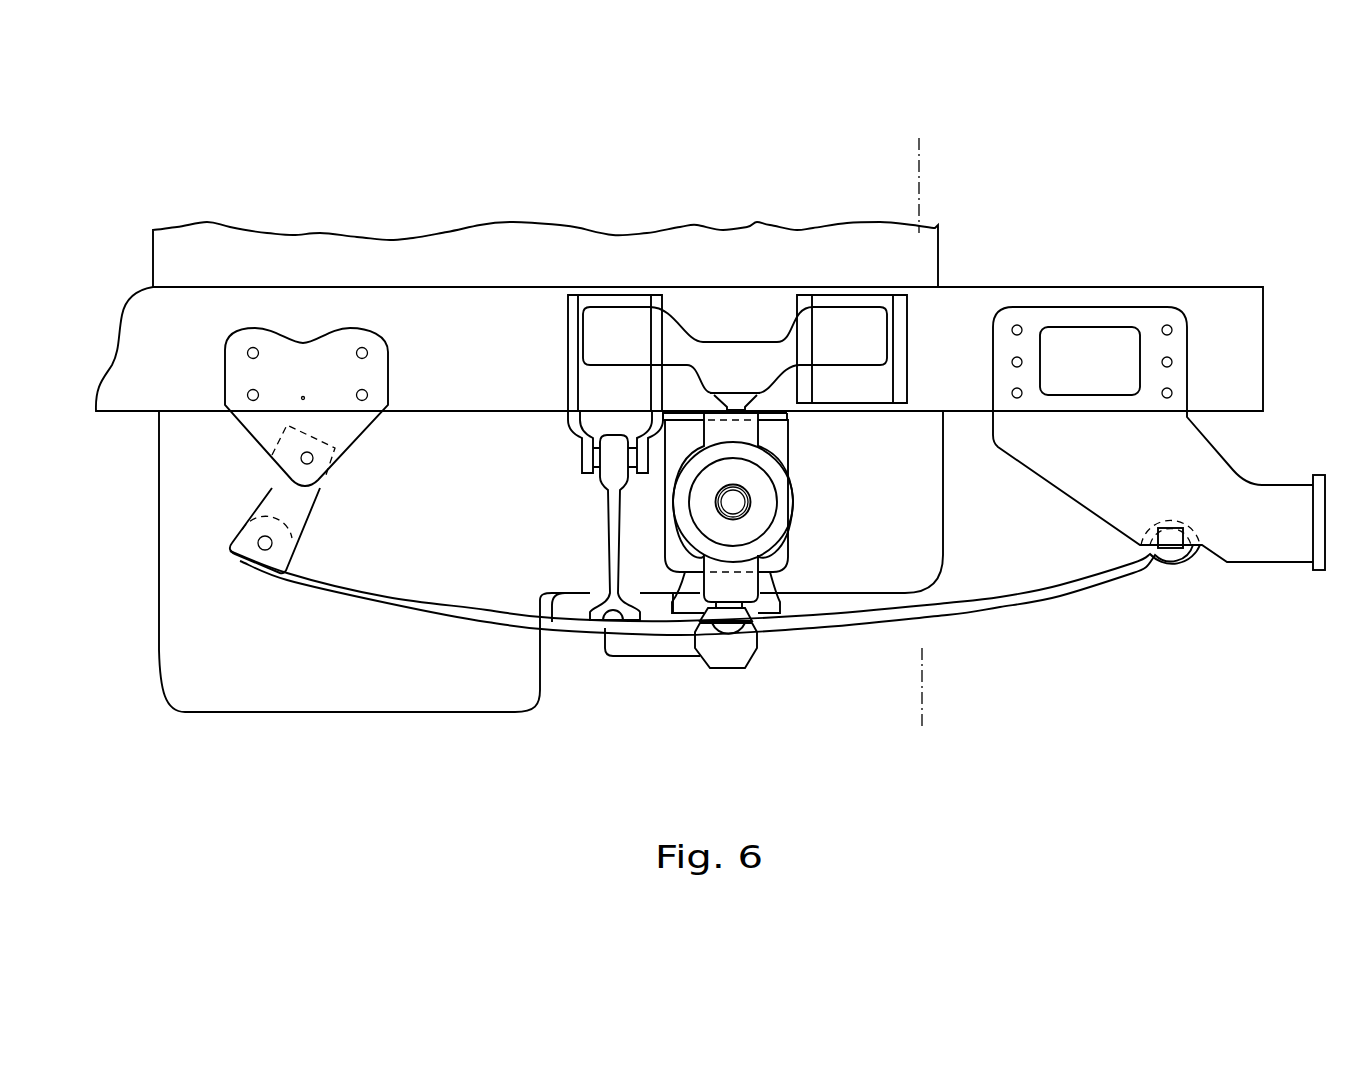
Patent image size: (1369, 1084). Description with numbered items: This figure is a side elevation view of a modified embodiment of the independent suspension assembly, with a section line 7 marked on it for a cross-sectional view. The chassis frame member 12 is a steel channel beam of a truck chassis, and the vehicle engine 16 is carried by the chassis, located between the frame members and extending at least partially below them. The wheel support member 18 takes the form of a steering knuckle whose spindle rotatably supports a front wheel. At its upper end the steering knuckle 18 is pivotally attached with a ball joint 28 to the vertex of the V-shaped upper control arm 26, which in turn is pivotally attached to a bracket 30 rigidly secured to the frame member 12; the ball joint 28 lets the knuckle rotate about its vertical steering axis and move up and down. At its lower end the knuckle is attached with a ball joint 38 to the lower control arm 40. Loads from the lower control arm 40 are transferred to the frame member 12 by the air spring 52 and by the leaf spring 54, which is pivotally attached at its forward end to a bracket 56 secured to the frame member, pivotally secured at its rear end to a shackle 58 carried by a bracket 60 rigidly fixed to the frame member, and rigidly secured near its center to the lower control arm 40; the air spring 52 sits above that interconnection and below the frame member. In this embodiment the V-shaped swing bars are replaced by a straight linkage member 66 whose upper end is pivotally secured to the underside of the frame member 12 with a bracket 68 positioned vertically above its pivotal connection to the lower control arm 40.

The section line 7 is at (905, 138).
The frame member 12 is at (975, 302).
The vehicle engine 16 is at (484, 237).
The wheel support member 18 is at (783, 527).
The upper control arm 26 is at (680, 343).
The ball joint 28 is at (735, 410).
The bracket 30 is at (655, 302).
The ball joint 38 is at (727, 612).
The lower control arm 40 is at (728, 653).
The air spring 52 is at (778, 435).
The leaf spring 54 is at (867, 623).
The bracket 56 is at (1207, 457).
The shackle 58 is at (272, 489).
The bracket 60 is at (353, 433).
The straight linkage member 66 is at (612, 530).
The bracket 68 is at (572, 420).